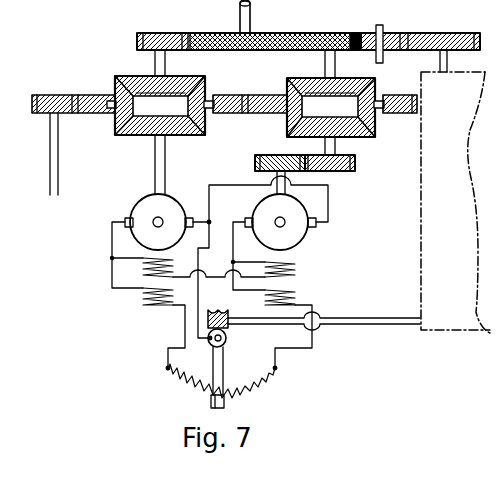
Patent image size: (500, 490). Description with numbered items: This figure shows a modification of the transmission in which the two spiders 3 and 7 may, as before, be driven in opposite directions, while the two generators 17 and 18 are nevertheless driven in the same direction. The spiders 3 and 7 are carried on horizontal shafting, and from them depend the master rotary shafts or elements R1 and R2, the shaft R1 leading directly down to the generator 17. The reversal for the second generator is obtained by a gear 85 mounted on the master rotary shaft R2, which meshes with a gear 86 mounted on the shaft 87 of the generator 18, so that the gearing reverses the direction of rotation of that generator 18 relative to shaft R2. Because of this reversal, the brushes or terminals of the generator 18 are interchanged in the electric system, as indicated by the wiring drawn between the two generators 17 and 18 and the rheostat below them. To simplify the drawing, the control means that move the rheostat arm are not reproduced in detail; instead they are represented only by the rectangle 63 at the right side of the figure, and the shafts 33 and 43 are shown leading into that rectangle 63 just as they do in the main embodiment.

The spider 3 is at (102, 98).
The spider 7 is at (386, 100).
The generator 17 is at (168, 203).
The generator 18 is at (260, 207).
The shaft 33 is at (386, 323).
The shaft 43 is at (447, 62).
The rectangle 63 is at (425, 332).
The gear 85 is at (335, 171).
The gear 86 is at (280, 155).
The shaft 87 is at (285, 188).
The master rotary shaft R1 is at (165, 157).
The master rotary shaft R2 is at (335, 148).